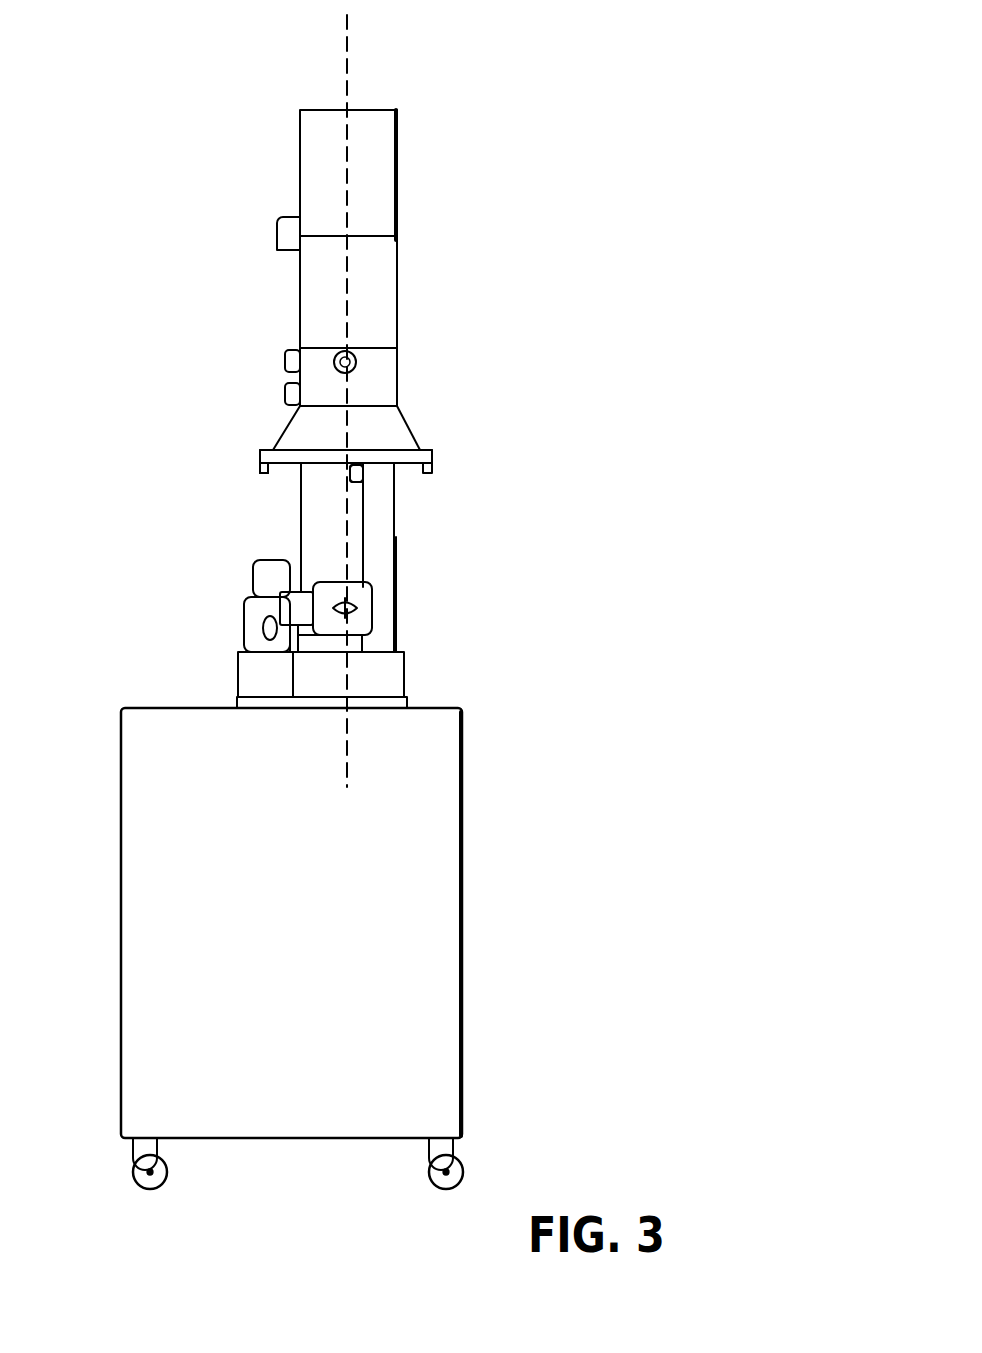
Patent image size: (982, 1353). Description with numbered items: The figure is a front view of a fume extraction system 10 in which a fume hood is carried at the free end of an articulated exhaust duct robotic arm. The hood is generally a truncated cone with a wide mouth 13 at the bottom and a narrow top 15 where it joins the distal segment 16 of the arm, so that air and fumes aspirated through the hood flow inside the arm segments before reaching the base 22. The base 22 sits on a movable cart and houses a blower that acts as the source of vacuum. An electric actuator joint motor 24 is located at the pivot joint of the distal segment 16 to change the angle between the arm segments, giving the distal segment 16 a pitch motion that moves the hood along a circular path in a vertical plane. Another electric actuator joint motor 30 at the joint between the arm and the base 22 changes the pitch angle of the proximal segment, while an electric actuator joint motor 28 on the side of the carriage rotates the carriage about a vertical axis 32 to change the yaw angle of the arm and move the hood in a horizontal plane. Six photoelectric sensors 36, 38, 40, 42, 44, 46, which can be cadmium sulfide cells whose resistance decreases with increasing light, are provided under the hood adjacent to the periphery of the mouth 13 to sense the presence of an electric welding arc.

The fume extraction system 10 is at (535, 170).
The wide mouth 13 is at (251, 414).
The narrow top 15 is at (415, 363).
The distal segment 16 is at (440, 229).
The base 22 is at (467, 968).
The electric actuator joint motor 24 is at (215, 214).
The electric actuator joint motor 28 is at (205, 624).
The electric actuator joint motor 30 is at (440, 777).
The vertical axis 32 is at (400, 658).
The photoelectric sensor 36 is at (467, 436).
The photoelectric sensor 38 is at (148, 517).
The photoelectric sensor 40 is at (488, 523).
The photoelectric sensor 42 is at (356, 473).
The photoelectric sensor 44 is at (346, 456).
The photoelectric sensor 46 is at (264, 468).